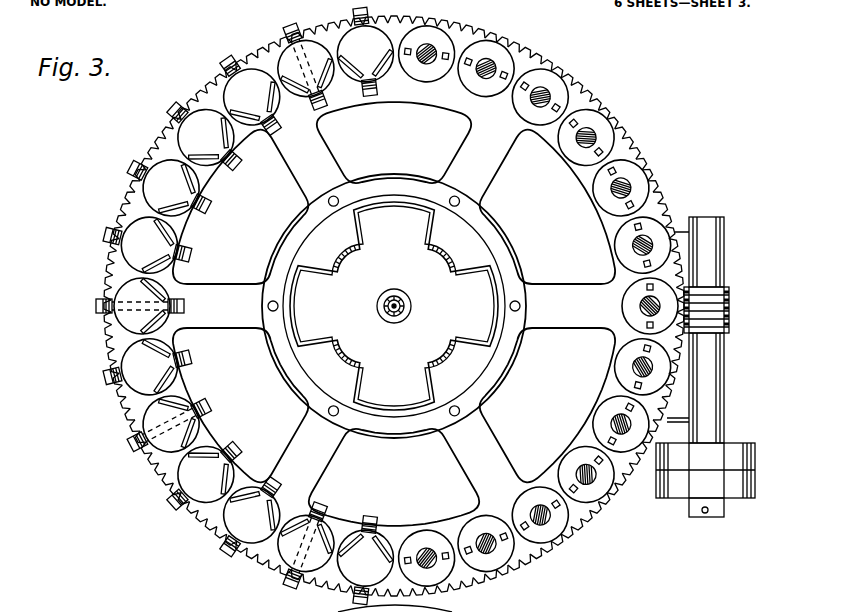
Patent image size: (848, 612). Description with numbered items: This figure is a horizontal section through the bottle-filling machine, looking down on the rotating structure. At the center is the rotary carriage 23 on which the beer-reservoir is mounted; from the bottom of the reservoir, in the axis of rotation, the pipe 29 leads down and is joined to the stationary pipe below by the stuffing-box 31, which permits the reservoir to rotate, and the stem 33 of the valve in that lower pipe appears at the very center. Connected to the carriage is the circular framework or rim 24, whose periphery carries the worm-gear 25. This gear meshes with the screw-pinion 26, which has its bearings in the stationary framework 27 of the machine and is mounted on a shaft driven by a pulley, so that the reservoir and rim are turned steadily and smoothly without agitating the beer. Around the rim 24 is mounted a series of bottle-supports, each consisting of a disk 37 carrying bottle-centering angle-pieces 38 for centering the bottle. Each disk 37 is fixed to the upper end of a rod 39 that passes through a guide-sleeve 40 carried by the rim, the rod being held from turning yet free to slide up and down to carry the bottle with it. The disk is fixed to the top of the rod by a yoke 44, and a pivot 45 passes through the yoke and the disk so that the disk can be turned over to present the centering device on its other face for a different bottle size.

The rotary carriage 23 is at (394, 306).
The circular framework or rim 24 is at (393, 314).
The worm-gear 25 is at (396, 306).
The screw-pinion 26 is at (728, 301).
The stationary framework 27 is at (720, 368).
The pipe 29 is at (414, 311).
The stuffing-box 31 is at (418, 304).
The valve stem 33 is at (375, 306).
The disk 37 is at (202, 382).
The bottle-centering angle-pieces 38 is at (189, 332).
The rod 39 is at (541, 339).
The guide-sleeve 40 is at (535, 242).
The yoke 44 is at (164, 266).
The pivot 45 is at (204, 511).